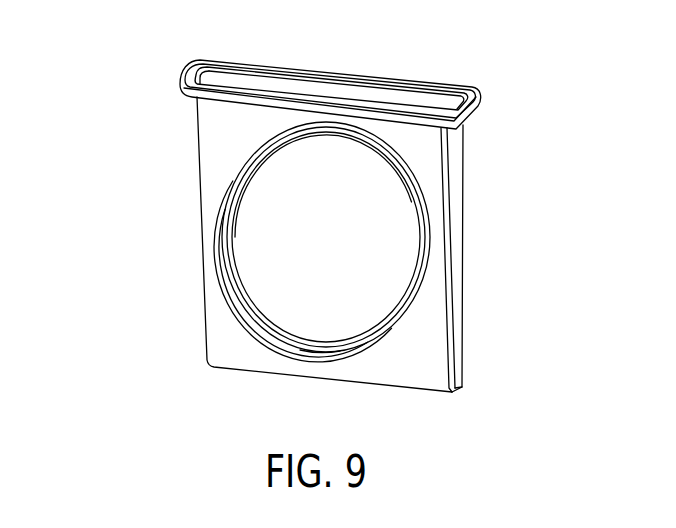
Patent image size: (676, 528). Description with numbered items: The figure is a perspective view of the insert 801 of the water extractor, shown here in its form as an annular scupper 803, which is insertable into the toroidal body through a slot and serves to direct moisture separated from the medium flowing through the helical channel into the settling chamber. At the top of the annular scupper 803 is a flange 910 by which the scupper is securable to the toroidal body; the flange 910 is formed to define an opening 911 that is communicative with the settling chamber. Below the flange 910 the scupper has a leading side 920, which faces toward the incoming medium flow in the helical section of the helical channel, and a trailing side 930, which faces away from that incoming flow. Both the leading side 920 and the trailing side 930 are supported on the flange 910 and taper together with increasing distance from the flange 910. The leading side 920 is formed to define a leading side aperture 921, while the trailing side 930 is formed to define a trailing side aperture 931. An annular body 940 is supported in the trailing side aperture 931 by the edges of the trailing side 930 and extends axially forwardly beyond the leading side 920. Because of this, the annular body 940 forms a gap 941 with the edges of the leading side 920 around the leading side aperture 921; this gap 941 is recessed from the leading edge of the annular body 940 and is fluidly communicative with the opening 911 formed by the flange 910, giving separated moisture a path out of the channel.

The insert 801 is at (170, 200).
The annular scupper 803 is at (238, 246).
The flange 910 is at (193, 79).
The opening 911 is at (258, 88).
The leading side 920 is at (218, 340).
The leading side aperture 921 is at (233, 165).
The trailing side 930 is at (458, 215).
The trailing side aperture 931 is at (252, 293).
The annular body 940 is at (240, 284).
The gap 941 is at (283, 333).